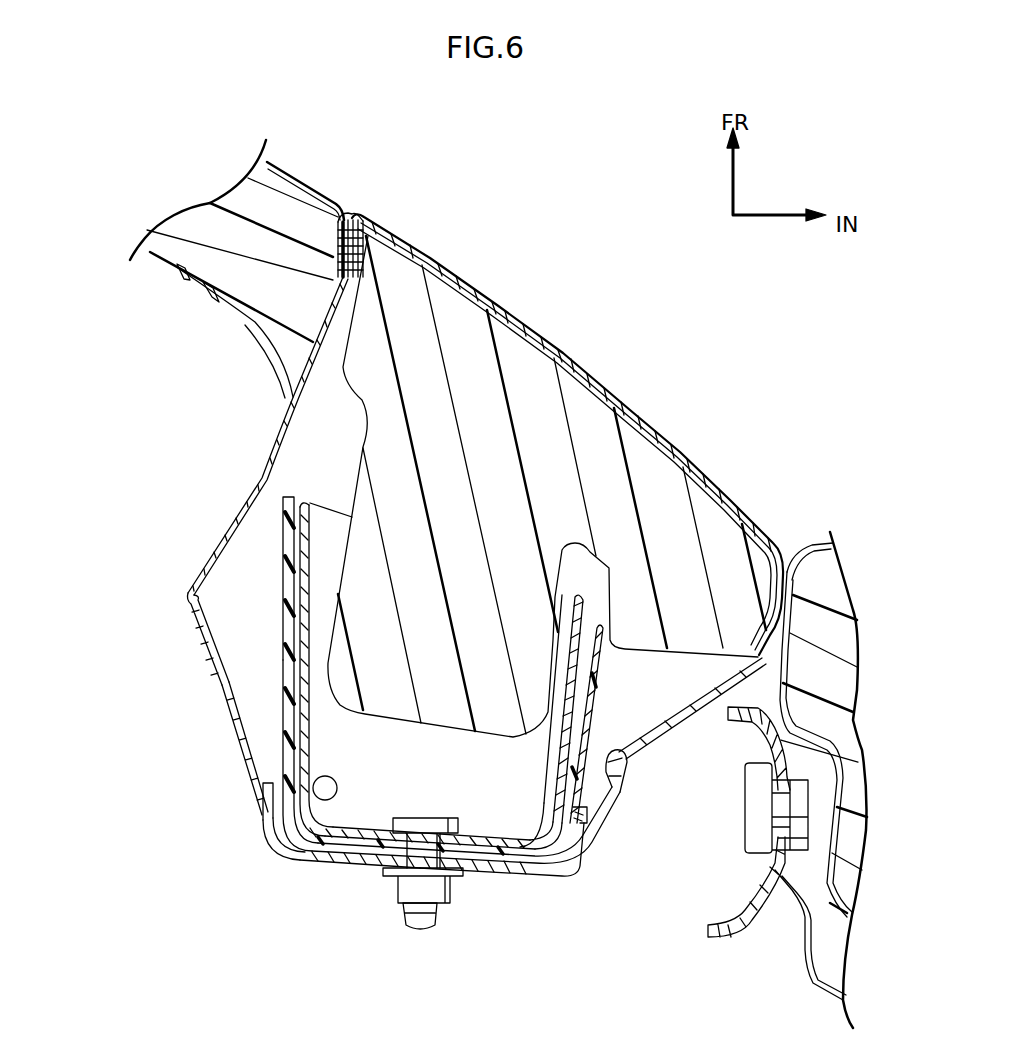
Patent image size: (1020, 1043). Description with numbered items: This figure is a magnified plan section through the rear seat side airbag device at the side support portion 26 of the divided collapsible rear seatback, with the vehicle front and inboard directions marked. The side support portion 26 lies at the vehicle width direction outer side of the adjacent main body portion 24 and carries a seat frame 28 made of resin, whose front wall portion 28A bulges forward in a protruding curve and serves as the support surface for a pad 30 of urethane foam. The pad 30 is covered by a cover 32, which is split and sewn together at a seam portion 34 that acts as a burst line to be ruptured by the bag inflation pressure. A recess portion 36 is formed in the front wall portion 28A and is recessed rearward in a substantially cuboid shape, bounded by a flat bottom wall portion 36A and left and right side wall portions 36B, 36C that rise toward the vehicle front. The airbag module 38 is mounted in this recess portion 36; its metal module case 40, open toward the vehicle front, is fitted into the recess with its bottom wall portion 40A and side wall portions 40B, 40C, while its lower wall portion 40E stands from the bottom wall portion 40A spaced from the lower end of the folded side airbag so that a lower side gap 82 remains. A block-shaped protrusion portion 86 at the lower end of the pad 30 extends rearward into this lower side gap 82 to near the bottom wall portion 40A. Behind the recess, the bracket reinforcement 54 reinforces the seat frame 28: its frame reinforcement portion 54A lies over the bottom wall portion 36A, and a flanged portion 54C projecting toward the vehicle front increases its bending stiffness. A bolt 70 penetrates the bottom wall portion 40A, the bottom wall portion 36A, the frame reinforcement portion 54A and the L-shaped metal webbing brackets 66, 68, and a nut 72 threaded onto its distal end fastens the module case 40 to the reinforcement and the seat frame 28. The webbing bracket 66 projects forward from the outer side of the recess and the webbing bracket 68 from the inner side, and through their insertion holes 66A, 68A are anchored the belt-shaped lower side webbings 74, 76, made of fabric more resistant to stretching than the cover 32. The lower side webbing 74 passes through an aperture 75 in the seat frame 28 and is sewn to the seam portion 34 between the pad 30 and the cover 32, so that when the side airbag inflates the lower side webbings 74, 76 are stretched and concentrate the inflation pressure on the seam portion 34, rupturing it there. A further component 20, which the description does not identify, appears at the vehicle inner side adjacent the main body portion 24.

The bumper reinforcement bracket 20 is at (721, 932).
The main body portion 24 is at (800, 530).
The side support portion 26 is at (478, 227).
The seat frame 28 is at (186, 278).
The front wall portion 28A is at (200, 290).
The pad 30 is at (533, 348).
The cover 32 is at (590, 367).
The seam portion 34 is at (357, 207).
The recess portion 36 is at (284, 647).
The bottom wall portion 36A is at (495, 866).
The side wall portion 36B is at (282, 742).
The side wall portion 36C is at (624, 760).
The airbag module 38 is at (332, 494).
The module case 40 is at (575, 855).
The bottom wall portion 40A is at (346, 852).
The side wall portion 40B is at (330, 548).
The side wall portion 40C is at (590, 692).
The lower wall portion 40E is at (330, 543).
The bracket reinforcement 54 is at (263, 821).
The frame reinforcement portion 54A is at (330, 850).
The flanged portion 54C is at (263, 800).
The webbing bracket 66 is at (240, 783).
The insertion hole 66A is at (219, 706).
The webbing bracket 68 is at (562, 870).
The insertion hole 68A is at (600, 810).
The bolt 70 is at (420, 915).
The nut 72 is at (400, 895).
The lower side webbing 74 is at (268, 466).
The aperture 75 is at (230, 312).
The lower side webbing 76 is at (667, 722).
The lower side gap 82 is at (503, 800).
The protrusion portion 86 is at (385, 705).